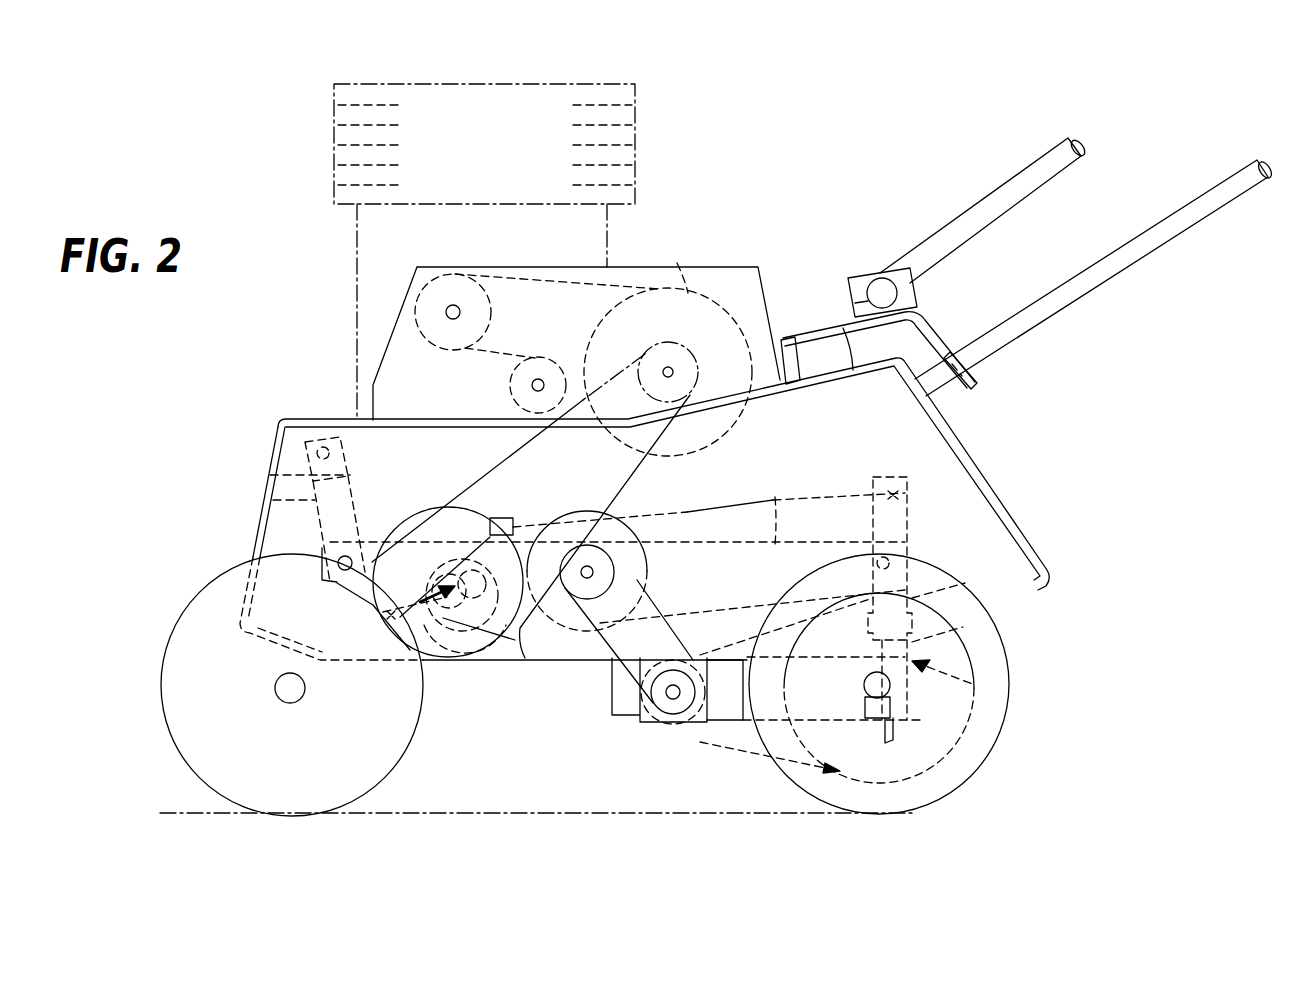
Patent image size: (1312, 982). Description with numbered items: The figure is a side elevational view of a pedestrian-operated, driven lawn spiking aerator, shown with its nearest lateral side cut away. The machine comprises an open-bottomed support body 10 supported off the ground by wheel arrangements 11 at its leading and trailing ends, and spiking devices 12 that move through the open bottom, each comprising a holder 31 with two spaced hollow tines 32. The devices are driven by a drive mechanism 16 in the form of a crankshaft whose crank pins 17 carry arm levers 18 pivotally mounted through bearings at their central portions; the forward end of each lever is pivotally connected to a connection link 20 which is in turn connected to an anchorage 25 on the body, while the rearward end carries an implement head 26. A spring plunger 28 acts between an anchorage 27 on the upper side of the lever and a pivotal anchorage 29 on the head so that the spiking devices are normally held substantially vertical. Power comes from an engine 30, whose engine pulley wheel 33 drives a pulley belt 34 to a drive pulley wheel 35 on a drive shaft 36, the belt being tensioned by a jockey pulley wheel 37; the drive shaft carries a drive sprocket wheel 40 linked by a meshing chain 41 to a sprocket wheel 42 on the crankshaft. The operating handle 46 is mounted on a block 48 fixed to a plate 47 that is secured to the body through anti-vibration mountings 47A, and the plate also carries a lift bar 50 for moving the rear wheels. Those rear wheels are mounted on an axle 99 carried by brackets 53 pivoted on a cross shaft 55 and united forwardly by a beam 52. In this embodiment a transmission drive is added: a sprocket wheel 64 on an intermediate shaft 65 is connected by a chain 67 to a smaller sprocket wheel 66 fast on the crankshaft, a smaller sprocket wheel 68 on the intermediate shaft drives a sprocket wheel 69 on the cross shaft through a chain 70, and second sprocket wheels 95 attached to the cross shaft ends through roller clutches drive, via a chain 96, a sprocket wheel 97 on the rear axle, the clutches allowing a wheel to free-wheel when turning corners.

The support body 10 is at (962, 451).
The wheel arrangements 11 is at (185, 755).
The spiking devices 12 is at (959, 679).
The drive mechanism 16 is at (382, 617).
The crank pins 17 is at (470, 648).
The arm levers 18 is at (788, 509).
The connection link 20 is at (268, 500).
The anchorage 25 is at (305, 447).
The implement head 26 is at (908, 525).
The anchorage 27 is at (487, 507).
The spring plunger 28 is at (687, 512).
The pivotal anchorage 29 is at (910, 495).
The engine 30 is at (640, 126).
The holder 31 is at (945, 600).
The tines 32 is at (906, 712).
The engine pulley wheel 33 is at (428, 297).
The pulley belt 34 is at (540, 285).
The drive pulley wheel 35 is at (677, 263).
The drive shaft 36 is at (674, 372).
The jockey pulley wheel 37 is at (536, 360).
The drive sprocket wheel 40 is at (690, 362).
The meshing chain 41 is at (500, 460).
The sprocket wheel 42 is at (403, 533).
The operating handle 46 is at (1002, 190).
The plate 47 is at (918, 312).
The anti-vibration mountings 47A is at (805, 340).
The block 48 is at (857, 277).
The lift bar 50 is at (1213, 192).
The beam 52 is at (612, 700).
The brackets 53 is at (735, 725).
The cross shaft 55 is at (640, 712).
The sprocket wheel 64 is at (595, 513).
The intermediate shaft 65 is at (598, 576).
The sprocket wheel 66 is at (418, 655).
The chain 67 is at (520, 640).
The sprocket wheel 68 is at (620, 530).
The sprocket wheel 69 is at (672, 725).
The chain 70 is at (585, 645).
The second sprocket wheel 95 is at (697, 715).
The chain 96 is at (810, 763).
The sprocket wheel 97 is at (960, 636).
The axle 99 is at (868, 700).